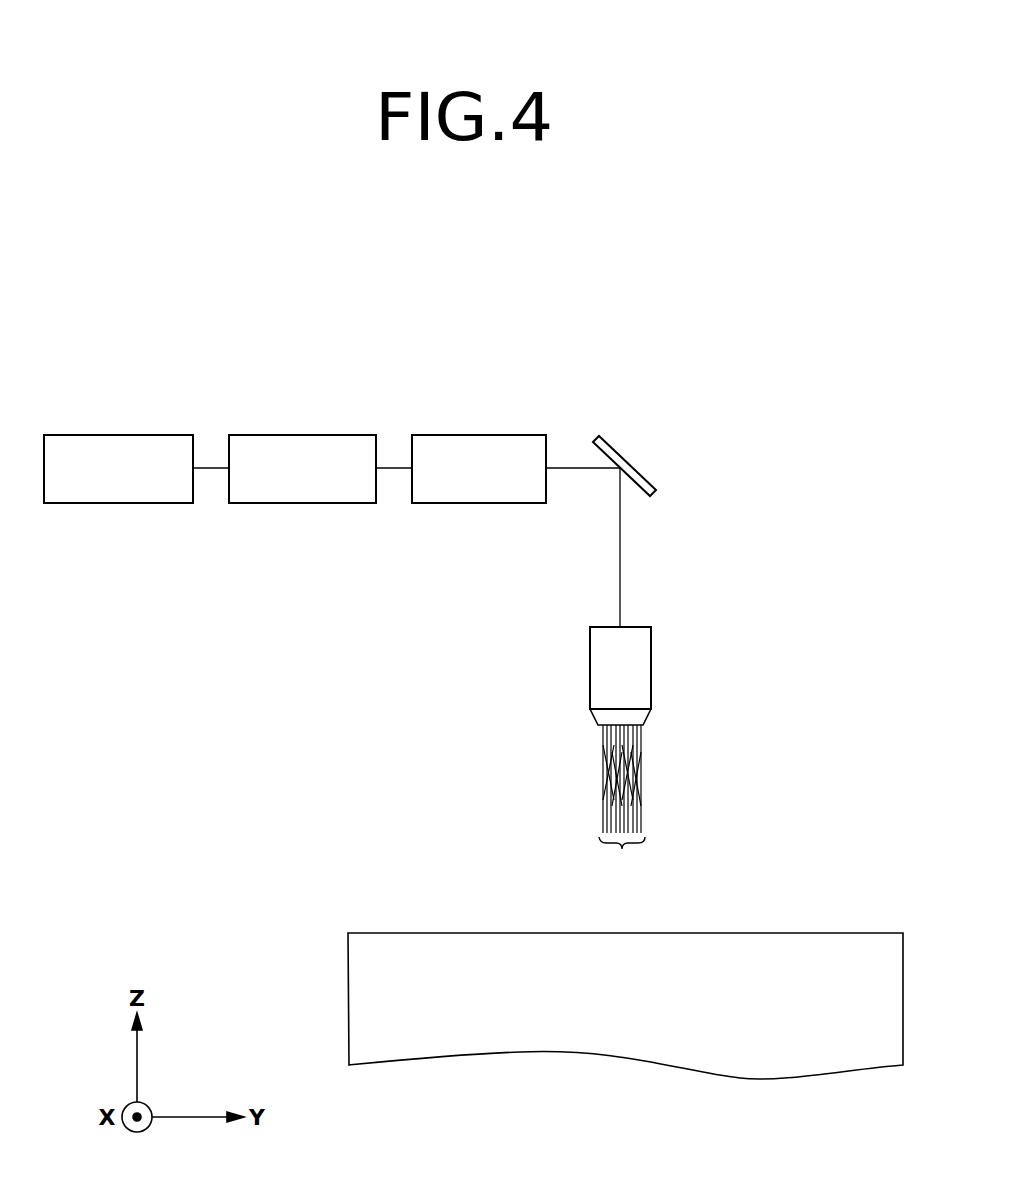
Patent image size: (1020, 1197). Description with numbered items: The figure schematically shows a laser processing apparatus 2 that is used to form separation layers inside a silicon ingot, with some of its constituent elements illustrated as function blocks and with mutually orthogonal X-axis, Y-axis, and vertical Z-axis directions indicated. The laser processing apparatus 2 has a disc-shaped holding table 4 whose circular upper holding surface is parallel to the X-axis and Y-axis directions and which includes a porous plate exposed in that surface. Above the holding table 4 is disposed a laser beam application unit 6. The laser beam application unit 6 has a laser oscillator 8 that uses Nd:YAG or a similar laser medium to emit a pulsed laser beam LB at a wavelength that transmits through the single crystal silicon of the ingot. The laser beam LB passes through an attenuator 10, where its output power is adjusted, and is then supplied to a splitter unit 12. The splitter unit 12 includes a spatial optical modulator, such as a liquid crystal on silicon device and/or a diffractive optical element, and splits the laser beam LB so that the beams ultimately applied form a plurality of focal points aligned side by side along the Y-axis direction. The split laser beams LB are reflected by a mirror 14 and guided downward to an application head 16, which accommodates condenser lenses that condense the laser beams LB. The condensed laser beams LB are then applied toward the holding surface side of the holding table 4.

The laser processing apparatus 2 is at (758, 374).
The holding table 4 is at (800, 933).
The laser beam application unit 6 is at (382, 583).
The laser oscillator 8 is at (117, 435).
The attenuator 10 is at (300, 435).
The splitter unit 12 is at (470, 435).
The mirror 14 is at (628, 462).
The application head 16 is at (590, 670).
The laser beam LB is at (622, 803).